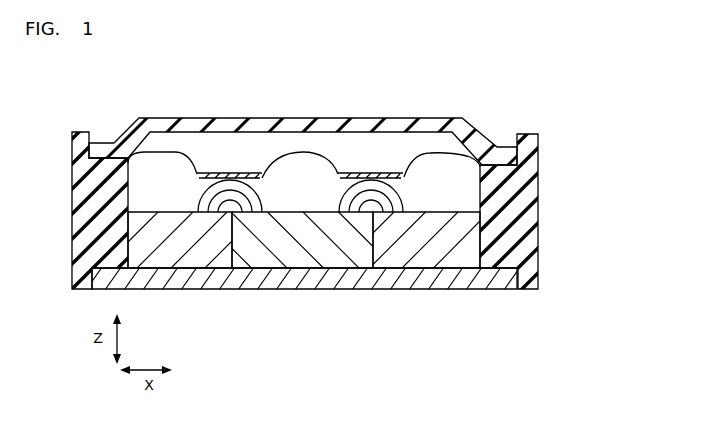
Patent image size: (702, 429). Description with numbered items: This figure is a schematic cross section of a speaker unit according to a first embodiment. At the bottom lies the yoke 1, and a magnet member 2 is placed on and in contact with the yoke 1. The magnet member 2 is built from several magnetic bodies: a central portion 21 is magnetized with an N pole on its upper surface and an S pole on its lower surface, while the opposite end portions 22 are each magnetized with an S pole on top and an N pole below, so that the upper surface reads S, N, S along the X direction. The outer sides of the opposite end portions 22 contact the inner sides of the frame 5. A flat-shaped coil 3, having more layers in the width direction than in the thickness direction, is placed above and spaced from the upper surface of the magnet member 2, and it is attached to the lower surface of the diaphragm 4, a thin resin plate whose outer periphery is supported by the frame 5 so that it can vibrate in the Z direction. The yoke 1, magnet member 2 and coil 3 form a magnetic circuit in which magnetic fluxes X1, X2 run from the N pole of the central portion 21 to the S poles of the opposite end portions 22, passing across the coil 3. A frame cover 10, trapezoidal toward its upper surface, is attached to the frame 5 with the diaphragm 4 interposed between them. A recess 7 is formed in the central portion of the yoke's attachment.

The yoke 1 is at (412, 276).
The magnet member 2 is at (304, 291).
The central portion 21 is at (273, 240).
The opposite end portions 22 is at (205, 242).
The coil 3 is at (251, 173).
The diaphragm 4 is at (302, 152).
The frame 5 is at (510, 187).
The recess 7 is at (509, 280).
The frame cover 10 is at (276, 118).
The magnetic flux X1 is at (380, 173).
The magnetic flux X2 is at (192, 173).